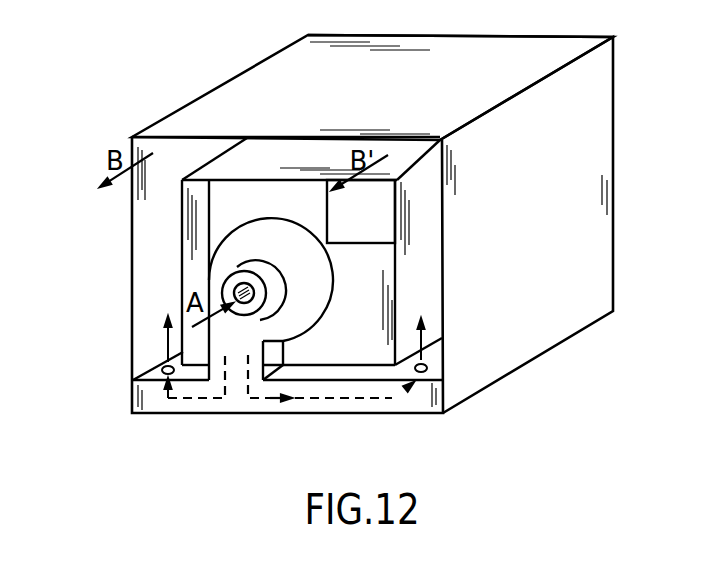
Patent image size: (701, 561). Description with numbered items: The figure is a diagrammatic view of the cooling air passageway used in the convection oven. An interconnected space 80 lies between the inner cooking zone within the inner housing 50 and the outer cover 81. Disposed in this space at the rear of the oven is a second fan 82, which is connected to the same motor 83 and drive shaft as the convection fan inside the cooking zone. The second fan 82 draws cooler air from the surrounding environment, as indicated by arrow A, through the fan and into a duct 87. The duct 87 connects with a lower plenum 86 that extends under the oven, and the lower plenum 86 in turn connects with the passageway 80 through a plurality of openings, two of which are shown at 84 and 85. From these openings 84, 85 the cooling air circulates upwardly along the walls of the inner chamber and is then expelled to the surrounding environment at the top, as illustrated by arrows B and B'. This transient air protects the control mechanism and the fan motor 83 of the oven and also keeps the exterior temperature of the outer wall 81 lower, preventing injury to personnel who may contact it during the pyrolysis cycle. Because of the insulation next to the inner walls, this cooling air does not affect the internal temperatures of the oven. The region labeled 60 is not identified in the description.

The inner housing 50 is at (337, 300).
The compartment 60 is at (435, 291).
The interconnected space 80 is at (143, 253).
The outer cover 81 is at (263, 60).
The second fan 82 is at (305, 238).
The motor 83 is at (245, 270).
The opening 84 is at (162, 371).
The opening 85 is at (428, 368).
The lower plenum 86 is at (333, 407).
The duct 87 is at (275, 355).